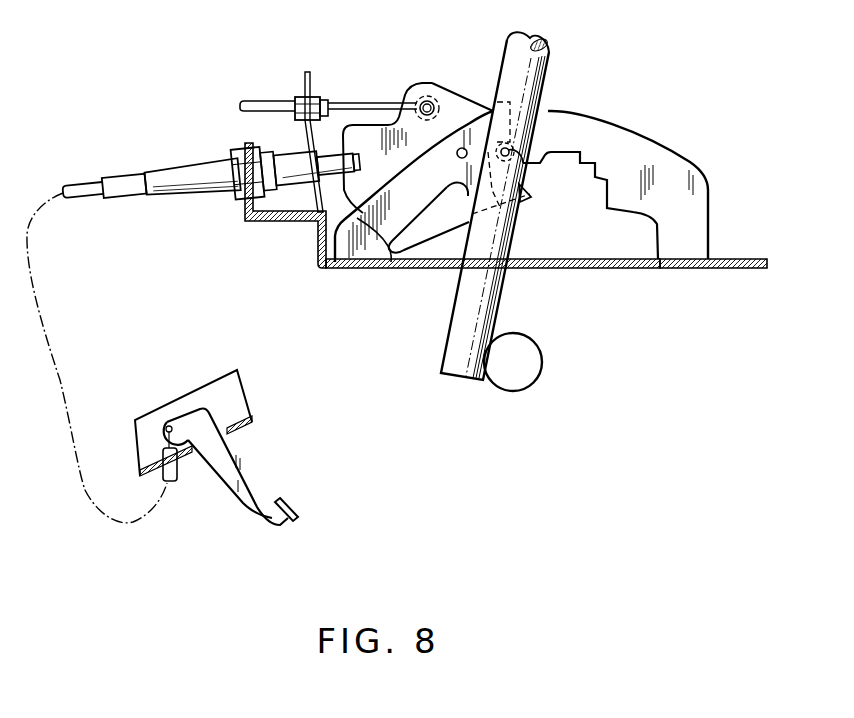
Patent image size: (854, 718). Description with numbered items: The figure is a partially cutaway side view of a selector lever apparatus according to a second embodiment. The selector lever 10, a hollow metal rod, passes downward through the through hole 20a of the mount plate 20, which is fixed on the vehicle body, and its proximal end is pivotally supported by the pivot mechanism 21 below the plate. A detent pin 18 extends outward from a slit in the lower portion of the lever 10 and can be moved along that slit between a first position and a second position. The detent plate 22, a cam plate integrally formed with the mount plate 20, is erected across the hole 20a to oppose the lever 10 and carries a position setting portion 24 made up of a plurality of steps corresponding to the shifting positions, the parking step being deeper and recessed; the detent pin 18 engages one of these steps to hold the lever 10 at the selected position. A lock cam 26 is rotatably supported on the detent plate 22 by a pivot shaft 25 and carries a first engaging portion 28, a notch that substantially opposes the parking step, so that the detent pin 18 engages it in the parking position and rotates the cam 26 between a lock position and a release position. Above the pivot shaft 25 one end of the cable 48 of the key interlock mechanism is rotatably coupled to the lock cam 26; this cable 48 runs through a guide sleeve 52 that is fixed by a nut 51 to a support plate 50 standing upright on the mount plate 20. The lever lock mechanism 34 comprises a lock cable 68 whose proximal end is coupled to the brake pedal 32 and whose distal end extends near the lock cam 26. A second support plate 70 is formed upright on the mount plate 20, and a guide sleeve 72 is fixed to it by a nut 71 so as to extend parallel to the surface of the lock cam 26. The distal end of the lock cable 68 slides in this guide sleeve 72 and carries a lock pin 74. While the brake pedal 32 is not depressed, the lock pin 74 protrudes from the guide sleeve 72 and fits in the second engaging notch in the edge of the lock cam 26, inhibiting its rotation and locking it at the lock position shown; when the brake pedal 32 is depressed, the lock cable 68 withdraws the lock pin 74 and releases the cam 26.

The selector lever 10 is at (549, 60).
The detent pin 18 is at (510, 152).
The mount plate 20 is at (733, 269).
The through hole 20a is at (607, 268).
The pivot mechanism 21 is at (530, 365).
The detent plate 22 is at (613, 127).
The position setting portion 24 is at (576, 158).
The pivot shaft 25 is at (458, 158).
The lock cam 26 is at (415, 92).
The first engaging portion 28 is at (490, 142).
The brake pedal 32 is at (237, 464).
The lever lock mechanism 34 is at (130, 201).
The cable 48 is at (262, 101).
The support plate 50 is at (307, 70).
The nut 51 is at (317, 95).
The guide sleeve 52 is at (327, 101).
The lock cable 68 is at (85, 182).
The support plate 70 is at (250, 210).
The nut 71 is at (243, 152).
The guide sleeve 72 is at (168, 165).
The lock pin 74 is at (333, 158).